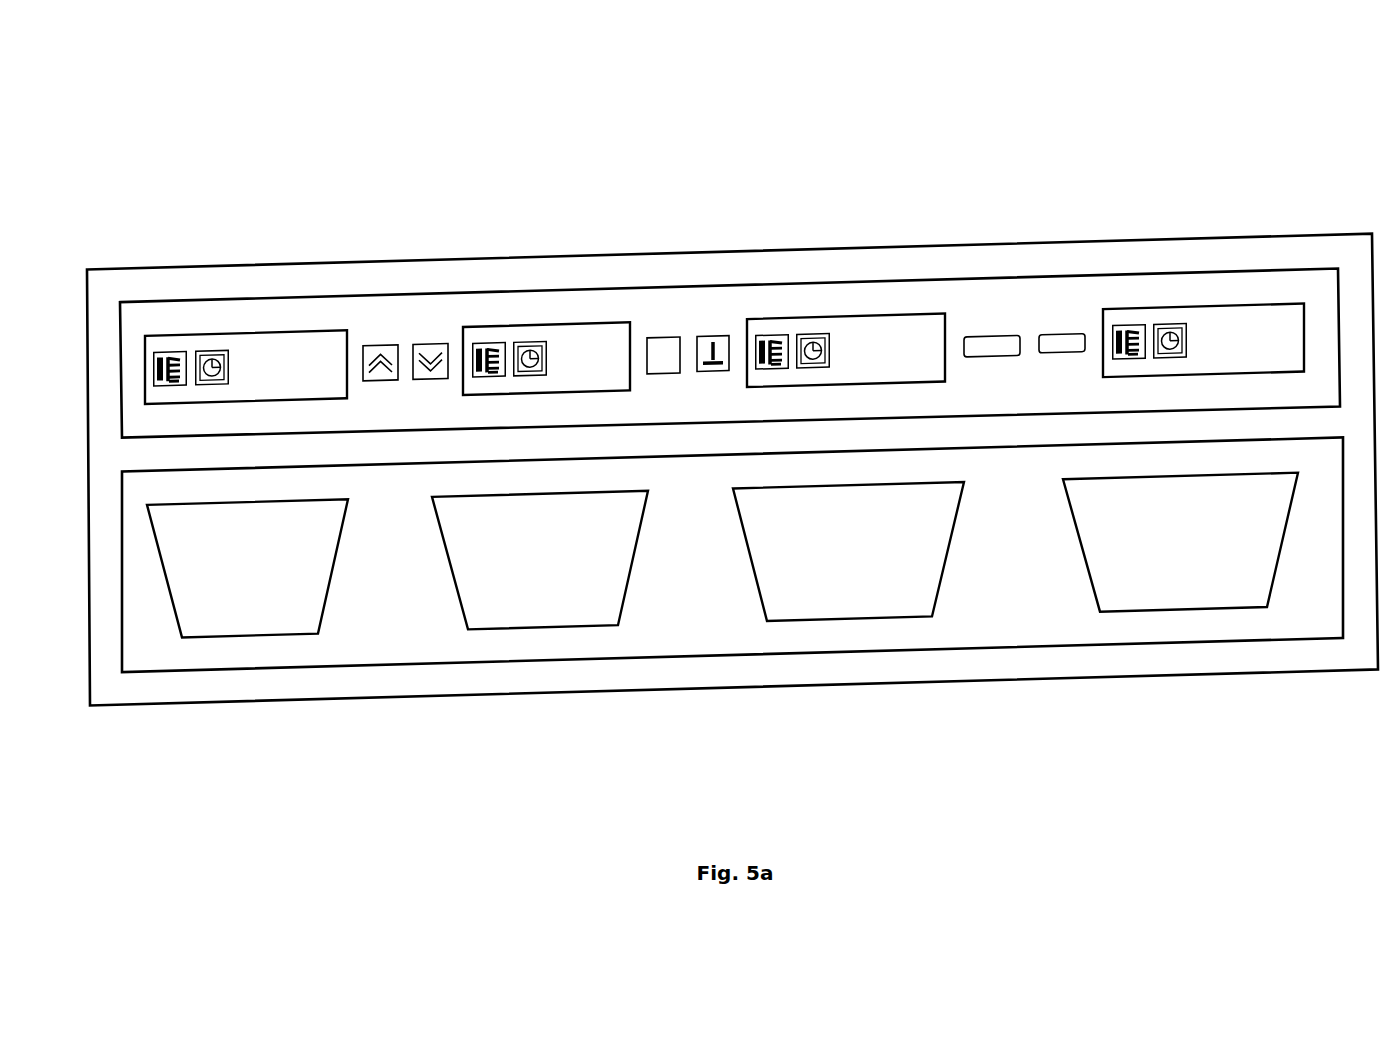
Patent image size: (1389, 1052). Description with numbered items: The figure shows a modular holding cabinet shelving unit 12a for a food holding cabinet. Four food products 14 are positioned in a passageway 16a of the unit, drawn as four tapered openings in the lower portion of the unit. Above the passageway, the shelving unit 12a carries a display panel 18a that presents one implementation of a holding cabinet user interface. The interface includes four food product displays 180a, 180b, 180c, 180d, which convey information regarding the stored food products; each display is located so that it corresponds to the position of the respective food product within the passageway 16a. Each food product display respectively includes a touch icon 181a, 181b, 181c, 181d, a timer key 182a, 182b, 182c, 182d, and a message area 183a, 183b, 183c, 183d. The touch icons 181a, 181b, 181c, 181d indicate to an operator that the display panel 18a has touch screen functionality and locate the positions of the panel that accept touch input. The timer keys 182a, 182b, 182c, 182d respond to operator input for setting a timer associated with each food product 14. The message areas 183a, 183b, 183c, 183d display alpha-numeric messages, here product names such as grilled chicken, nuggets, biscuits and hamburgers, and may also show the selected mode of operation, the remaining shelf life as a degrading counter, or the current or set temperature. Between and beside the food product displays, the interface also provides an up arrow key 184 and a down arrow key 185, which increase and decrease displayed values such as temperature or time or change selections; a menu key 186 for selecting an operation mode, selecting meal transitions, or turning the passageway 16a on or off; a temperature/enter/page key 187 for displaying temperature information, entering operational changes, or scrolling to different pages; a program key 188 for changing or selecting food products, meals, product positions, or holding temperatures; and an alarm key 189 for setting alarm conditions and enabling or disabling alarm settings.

The modular holding cabinet shelving unit 12a is at (132, 708).
The food products 14 is at (268, 642).
The passageway 16a is at (198, 676).
The display panel 18a is at (1312, 306).
The food product display 180a is at (313, 340).
The touch icon 181a is at (166, 356).
The timer key 182a is at (212, 356).
The message area 183a is at (263, 365).
The food product display 180b is at (603, 340).
The touch icon 181b is at (487, 356).
The timer key 182b is at (529, 356).
The message area 183b is at (578, 364).
The food product display 180c is at (918, 340).
The touch icon 181c is at (770, 356).
The timer key 182c is at (812, 356).
The message area 183c is at (870, 362).
The food product display 180d is at (1278, 340).
The touch icon 181d is at (1127, 356).
The timer key 182d is at (1170, 356).
The message area 183d is at (1220, 362).
The up arrow key 184 is at (375, 356).
The down arrow key 185 is at (429, 356).
The menu key 186 is at (663, 356).
The temperature/enter/page key 187 is at (696, 356).
The program key 188 is at (990, 364).
The alarm key 189 is at (1062, 364).